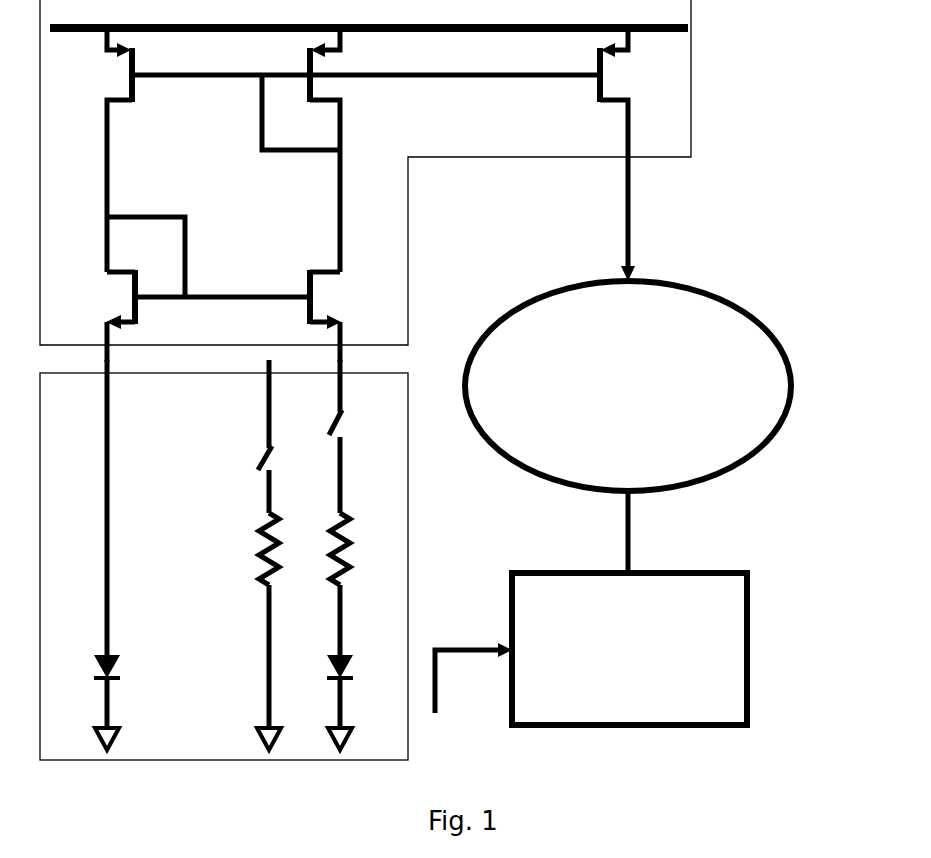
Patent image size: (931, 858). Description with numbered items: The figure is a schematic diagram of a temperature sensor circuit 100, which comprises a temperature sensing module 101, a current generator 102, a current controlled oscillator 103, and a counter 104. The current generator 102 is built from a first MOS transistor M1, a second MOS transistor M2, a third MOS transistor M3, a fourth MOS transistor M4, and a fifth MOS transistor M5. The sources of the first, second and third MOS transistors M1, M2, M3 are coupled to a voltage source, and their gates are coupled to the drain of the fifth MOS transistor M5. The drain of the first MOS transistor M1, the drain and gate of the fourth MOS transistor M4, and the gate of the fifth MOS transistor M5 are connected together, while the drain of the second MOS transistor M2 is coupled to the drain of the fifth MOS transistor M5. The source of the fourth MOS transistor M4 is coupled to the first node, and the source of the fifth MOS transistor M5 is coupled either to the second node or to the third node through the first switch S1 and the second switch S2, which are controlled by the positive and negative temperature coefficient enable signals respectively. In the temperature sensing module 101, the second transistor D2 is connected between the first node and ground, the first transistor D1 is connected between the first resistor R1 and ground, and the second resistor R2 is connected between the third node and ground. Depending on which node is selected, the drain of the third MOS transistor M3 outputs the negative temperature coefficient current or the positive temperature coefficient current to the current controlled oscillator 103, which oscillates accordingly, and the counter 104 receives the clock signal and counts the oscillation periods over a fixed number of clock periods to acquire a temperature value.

The temperature sensor circuit 100 is at (776, 75).
The temperature sensing module 101 is at (408, 483).
The current generator 102 is at (408, 245).
The current controlled oscillator 103 is at (735, 303).
The counter 104 is at (747, 612).
The first MOS transistor M1 is at (102, 150).
The second MOS transistor M2 is at (324, 150).
The third MOS transistor M3 is at (629, 154).
The fourth MOS transistor M4 is at (194, 289).
The fifth MOS transistor M5 is at (338, 316).
The first switch S1 is at (352, 401).
The second switch S2 is at (280, 420).
The first resistor R1 is at (359, 511).
The second resistor R2 is at (249, 610).
The first transistor D1 is at (359, 667).
The second transistor D2 is at (126, 555).